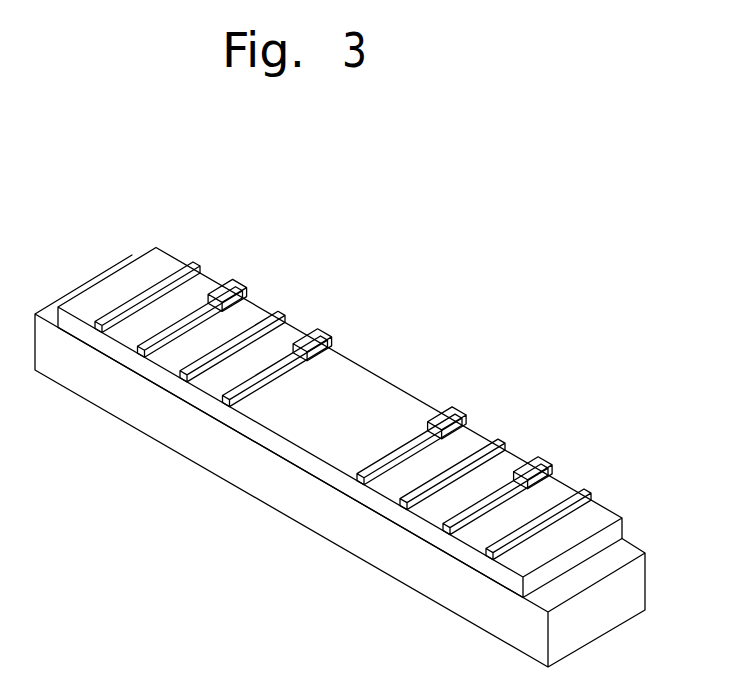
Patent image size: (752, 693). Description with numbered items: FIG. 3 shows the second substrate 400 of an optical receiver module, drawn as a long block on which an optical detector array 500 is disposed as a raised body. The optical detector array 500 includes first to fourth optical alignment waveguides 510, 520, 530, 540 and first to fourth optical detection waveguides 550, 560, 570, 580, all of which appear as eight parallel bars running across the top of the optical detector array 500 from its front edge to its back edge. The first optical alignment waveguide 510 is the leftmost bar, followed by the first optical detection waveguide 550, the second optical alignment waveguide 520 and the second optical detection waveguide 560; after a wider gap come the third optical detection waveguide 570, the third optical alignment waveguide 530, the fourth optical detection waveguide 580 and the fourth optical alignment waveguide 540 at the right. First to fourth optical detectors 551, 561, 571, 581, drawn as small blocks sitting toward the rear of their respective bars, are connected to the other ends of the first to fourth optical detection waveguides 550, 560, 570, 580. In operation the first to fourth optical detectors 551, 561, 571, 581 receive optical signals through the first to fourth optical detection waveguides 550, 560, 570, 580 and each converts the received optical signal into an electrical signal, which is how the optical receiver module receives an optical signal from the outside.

The second substrate 400 is at (467, 605).
The optical detector array 500 is at (283, 445).
The first optical alignment waveguide 510 is at (196, 262).
The second optical alignment waveguide 520 is at (278, 311).
The third optical alignment waveguide 530 is at (498, 441).
The fourth optical alignment waveguide 540 is at (584, 491).
The first optical detection waveguide 550 is at (139, 351).
The first optical detector 551 is at (232, 290).
The second optical detection waveguide 560 is at (222, 400).
The second optical detector 561 is at (319, 336).
The third optical detection waveguide 570 is at (359, 480).
The third optical detector 571 is at (452, 416).
The fourth optical detection waveguide 580 is at (443, 528).
The fourth optical detector 581 is at (537, 463).